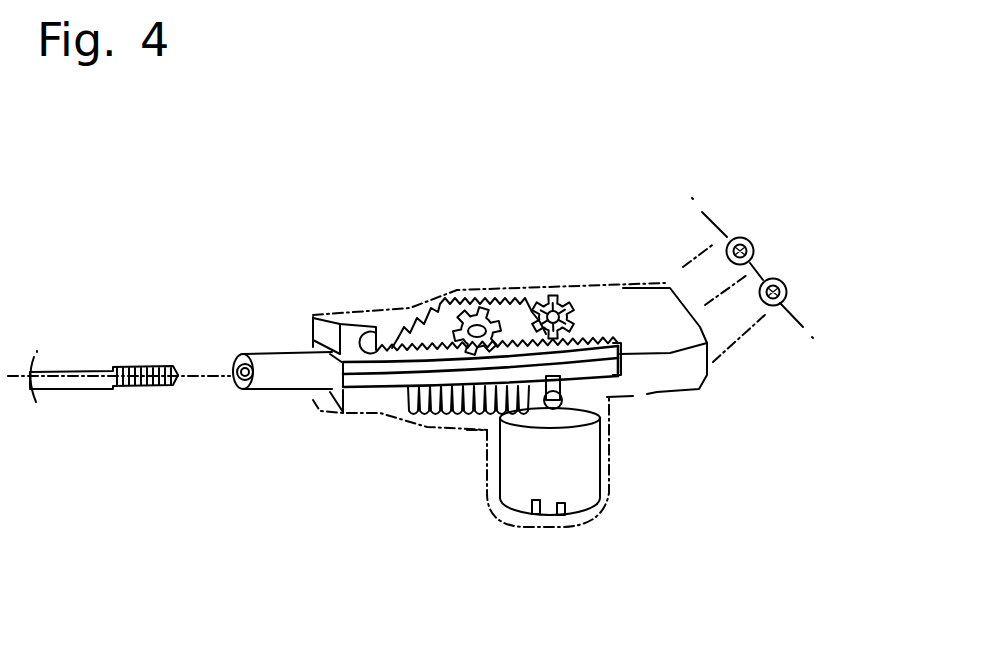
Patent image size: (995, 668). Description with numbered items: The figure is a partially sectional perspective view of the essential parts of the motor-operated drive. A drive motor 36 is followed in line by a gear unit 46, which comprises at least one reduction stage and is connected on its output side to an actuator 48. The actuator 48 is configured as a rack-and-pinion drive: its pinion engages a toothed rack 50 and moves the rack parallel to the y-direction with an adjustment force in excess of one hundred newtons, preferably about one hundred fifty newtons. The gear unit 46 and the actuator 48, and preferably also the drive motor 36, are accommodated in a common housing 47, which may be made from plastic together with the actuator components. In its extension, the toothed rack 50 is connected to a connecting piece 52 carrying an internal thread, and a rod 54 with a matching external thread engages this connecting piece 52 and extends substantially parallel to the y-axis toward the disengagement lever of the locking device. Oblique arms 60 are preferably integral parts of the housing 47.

The drive motor 36 is at (527, 478).
The gear unit 46 is at (524, 292).
The housing 47 is at (665, 395).
The actuator 48 is at (432, 326).
The toothed rack 50 is at (397, 372).
The connecting piece 52 is at (277, 363).
The rod 54 is at (100, 390).
The oblique arms 60 is at (680, 263).